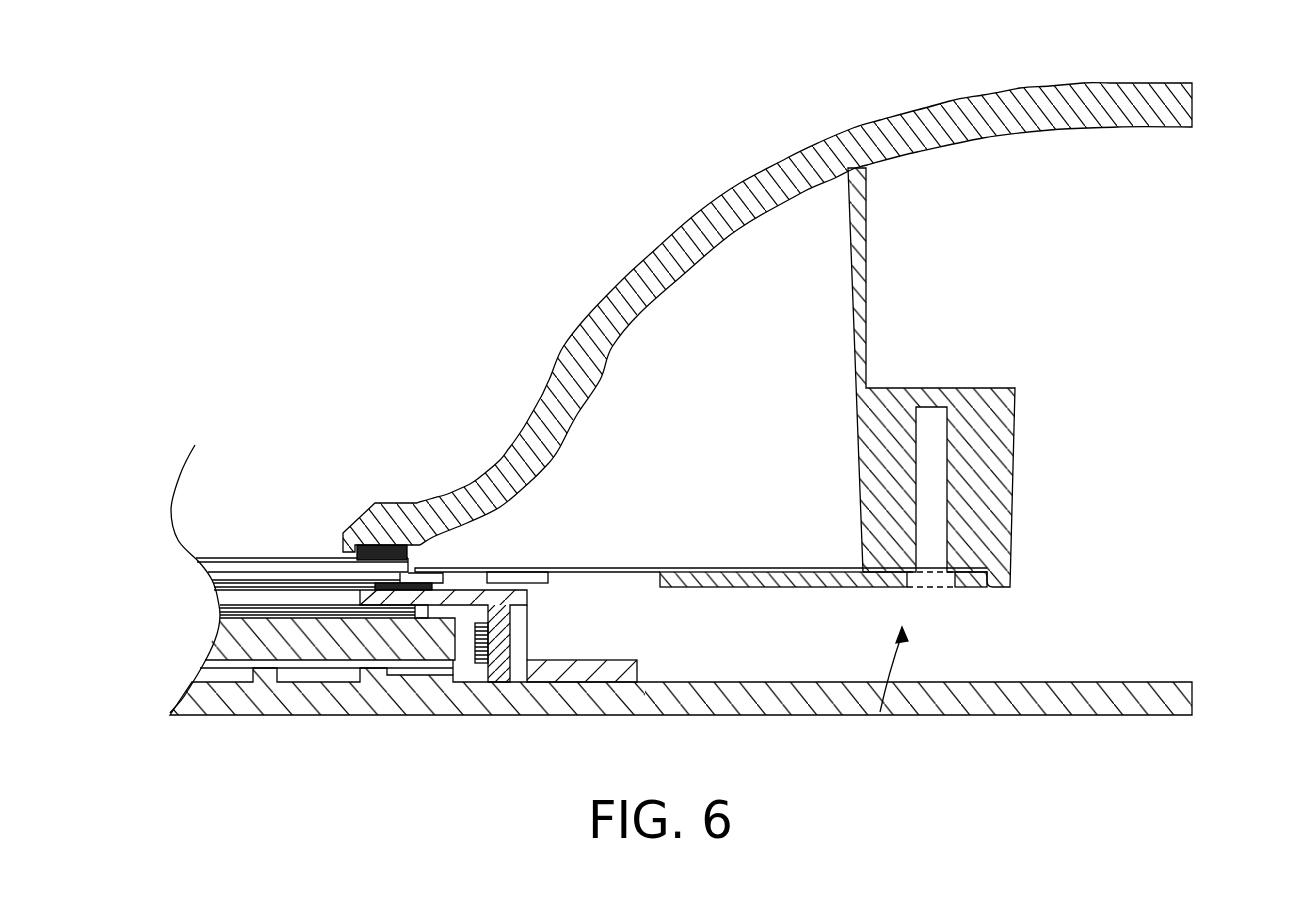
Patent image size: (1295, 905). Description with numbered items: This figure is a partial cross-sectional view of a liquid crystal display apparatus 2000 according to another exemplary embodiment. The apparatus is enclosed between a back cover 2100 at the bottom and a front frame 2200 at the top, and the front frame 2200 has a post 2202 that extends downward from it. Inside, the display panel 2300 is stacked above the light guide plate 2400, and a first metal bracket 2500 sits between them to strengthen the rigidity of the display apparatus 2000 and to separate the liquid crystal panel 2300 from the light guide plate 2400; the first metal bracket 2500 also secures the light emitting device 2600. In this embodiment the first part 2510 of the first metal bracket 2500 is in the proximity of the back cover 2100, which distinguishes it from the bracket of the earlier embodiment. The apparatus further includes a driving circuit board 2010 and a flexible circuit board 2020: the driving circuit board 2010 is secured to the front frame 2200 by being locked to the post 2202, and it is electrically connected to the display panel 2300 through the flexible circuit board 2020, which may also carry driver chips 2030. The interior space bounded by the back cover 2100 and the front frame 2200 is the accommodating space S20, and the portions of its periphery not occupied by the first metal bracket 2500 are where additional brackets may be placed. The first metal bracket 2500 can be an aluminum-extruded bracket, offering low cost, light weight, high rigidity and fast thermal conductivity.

The display apparatus 2000 is at (1263, 785).
The back cover 2100 is at (782, 700).
The front frame 2200 is at (947, 113).
The post 2202 is at (856, 432).
The display panel 2300 is at (296, 560).
The light guide plate 2400 is at (375, 650).
The first metal bracket 2500 is at (517, 628).
The first part 2510 is at (608, 675).
The light emitting device 2600 is at (492, 647).
The driving circuit board 2010 is at (762, 573).
The flexible circuit board 2020 is at (622, 570).
The driver chips 2030 is at (538, 577).
The accommodating space S20 is at (883, 707).